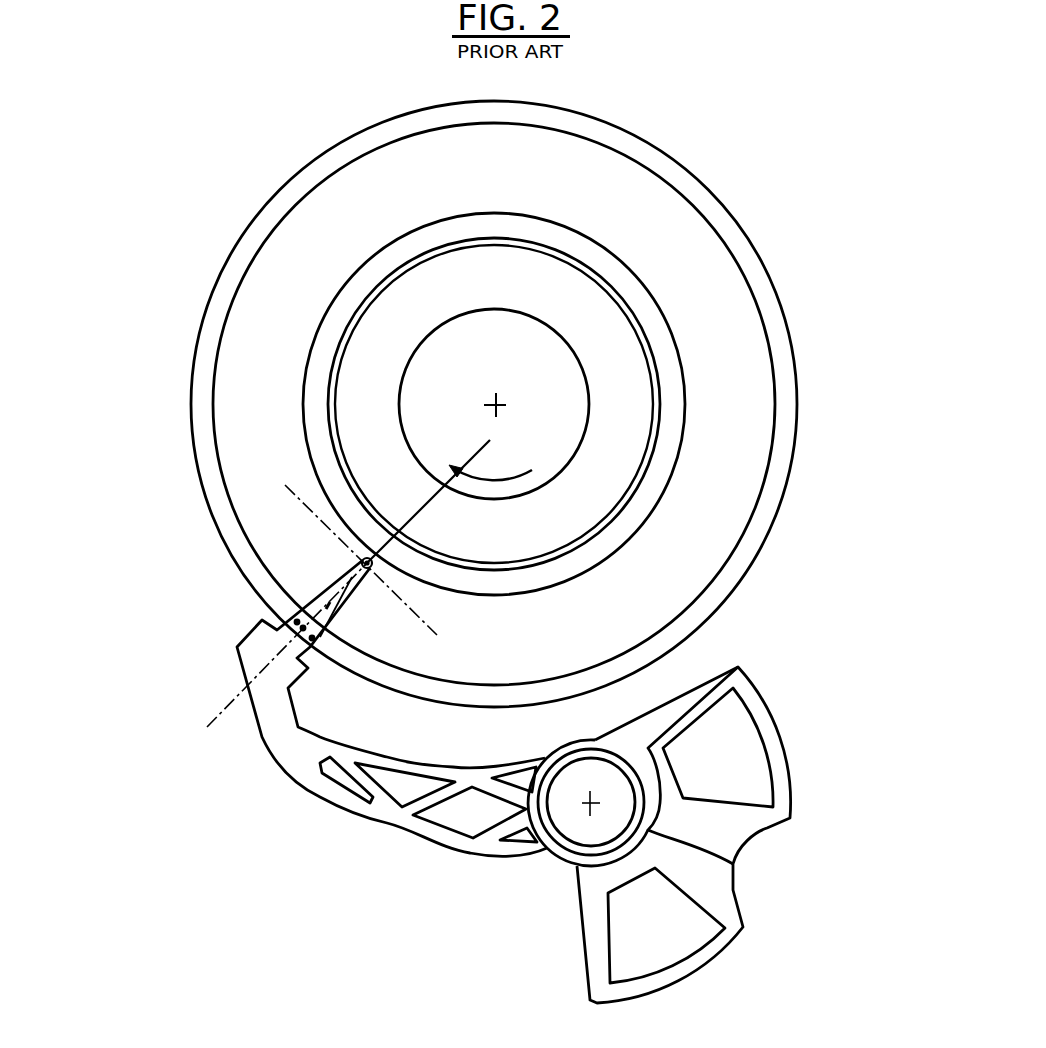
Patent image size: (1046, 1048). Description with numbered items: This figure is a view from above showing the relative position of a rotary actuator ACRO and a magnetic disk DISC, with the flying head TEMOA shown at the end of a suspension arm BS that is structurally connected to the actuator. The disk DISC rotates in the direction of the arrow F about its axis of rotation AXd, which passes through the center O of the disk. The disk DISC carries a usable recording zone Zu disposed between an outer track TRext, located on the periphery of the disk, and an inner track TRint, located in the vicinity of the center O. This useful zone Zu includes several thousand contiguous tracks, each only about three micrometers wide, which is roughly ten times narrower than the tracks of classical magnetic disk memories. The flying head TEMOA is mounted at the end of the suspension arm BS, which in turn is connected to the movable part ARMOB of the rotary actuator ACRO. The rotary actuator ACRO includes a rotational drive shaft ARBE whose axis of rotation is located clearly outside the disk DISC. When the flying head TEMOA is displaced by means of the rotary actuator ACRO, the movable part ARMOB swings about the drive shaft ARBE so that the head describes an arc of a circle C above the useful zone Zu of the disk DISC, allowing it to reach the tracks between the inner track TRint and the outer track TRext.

The disk DISC is at (688, 164).
The usable recording zone Zu is at (541, 404).
The inner track TRint is at (681, 374).
The outer track TRext is at (770, 448).
The axis of rotation AXd is at (497, 405).
The center of the disk O is at (498, 414).
The arrow F is at (490, 467).
The arc of a circle C is at (451, 504).
The flying head TEMOA is at (362, 562).
The suspension arm BS is at (345, 588).
The movable part ARMOB is at (357, 806).
The rotational drive shaft ARBE is at (733, 864).
The rotary actuator ACRO is at (775, 719).